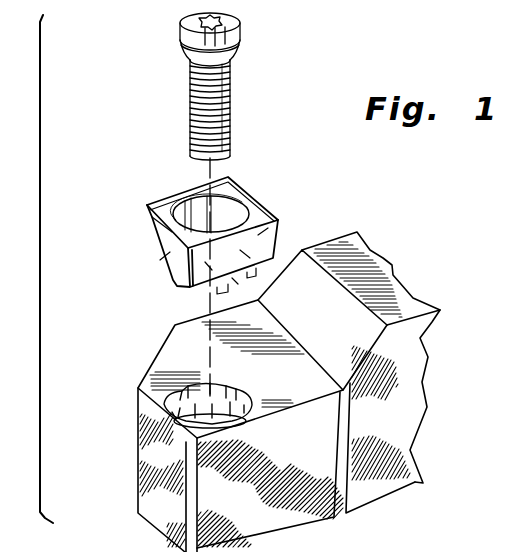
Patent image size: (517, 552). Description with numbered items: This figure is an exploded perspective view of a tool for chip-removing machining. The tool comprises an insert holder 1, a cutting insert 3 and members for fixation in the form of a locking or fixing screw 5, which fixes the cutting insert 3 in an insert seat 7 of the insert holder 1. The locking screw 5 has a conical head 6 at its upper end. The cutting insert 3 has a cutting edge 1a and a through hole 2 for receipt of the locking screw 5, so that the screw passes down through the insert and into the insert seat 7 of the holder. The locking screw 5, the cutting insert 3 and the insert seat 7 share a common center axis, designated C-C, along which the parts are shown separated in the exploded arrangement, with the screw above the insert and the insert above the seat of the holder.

The insert holder 1 is at (251, 392).
The cutting edge 1a is at (157, 246).
The through hole 2 is at (223, 213).
The cutting insert 3 is at (200, 224).
The locking screw 5 is at (238, 107).
The conical head 6 is at (190, 59).
The insert seat 7 is at (177, 382).
The center axis C-C is at (207, 310).